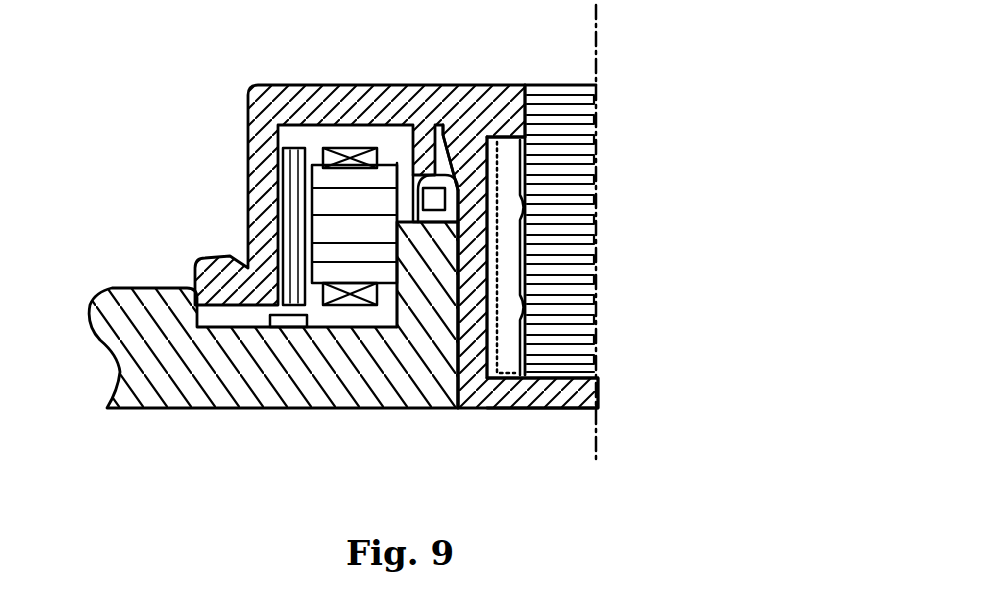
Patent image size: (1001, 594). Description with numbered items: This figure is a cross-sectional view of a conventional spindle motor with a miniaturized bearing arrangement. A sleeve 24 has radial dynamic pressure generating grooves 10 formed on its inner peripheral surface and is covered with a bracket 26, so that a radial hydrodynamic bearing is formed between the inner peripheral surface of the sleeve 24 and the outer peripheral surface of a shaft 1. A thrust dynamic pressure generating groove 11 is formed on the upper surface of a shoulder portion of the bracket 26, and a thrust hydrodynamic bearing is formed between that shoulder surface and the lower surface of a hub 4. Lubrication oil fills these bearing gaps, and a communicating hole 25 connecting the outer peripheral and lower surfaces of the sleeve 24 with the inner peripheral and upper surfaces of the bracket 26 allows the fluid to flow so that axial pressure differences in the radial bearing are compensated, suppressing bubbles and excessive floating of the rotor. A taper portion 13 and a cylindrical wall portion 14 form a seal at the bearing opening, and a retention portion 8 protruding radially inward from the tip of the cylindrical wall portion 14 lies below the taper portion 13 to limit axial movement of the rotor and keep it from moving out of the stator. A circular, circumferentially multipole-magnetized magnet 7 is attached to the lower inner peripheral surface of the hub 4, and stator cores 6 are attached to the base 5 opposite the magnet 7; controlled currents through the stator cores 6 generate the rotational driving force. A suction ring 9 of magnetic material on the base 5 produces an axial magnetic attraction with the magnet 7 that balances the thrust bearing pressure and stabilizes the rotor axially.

The shaft 1 is at (573, 155).
The hub 4 is at (262, 160).
The base 5 is at (157, 385).
The stator core 6 is at (363, 180).
The magnet 7 is at (290, 223).
The retention portion 8 is at (440, 215).
The suction ring 9 is at (283, 335).
The radial dynamic pressure generating grooves 10 is at (533, 303).
The thrust dynamic pressure generating groove 11 is at (470, 137).
The taper portion 13 is at (508, 137).
The cylindrical wall portion 14 is at (412, 163).
The sleeve 24 is at (520, 163).
The communicating hole 25 is at (462, 250).
The bracket 26 is at (445, 240).